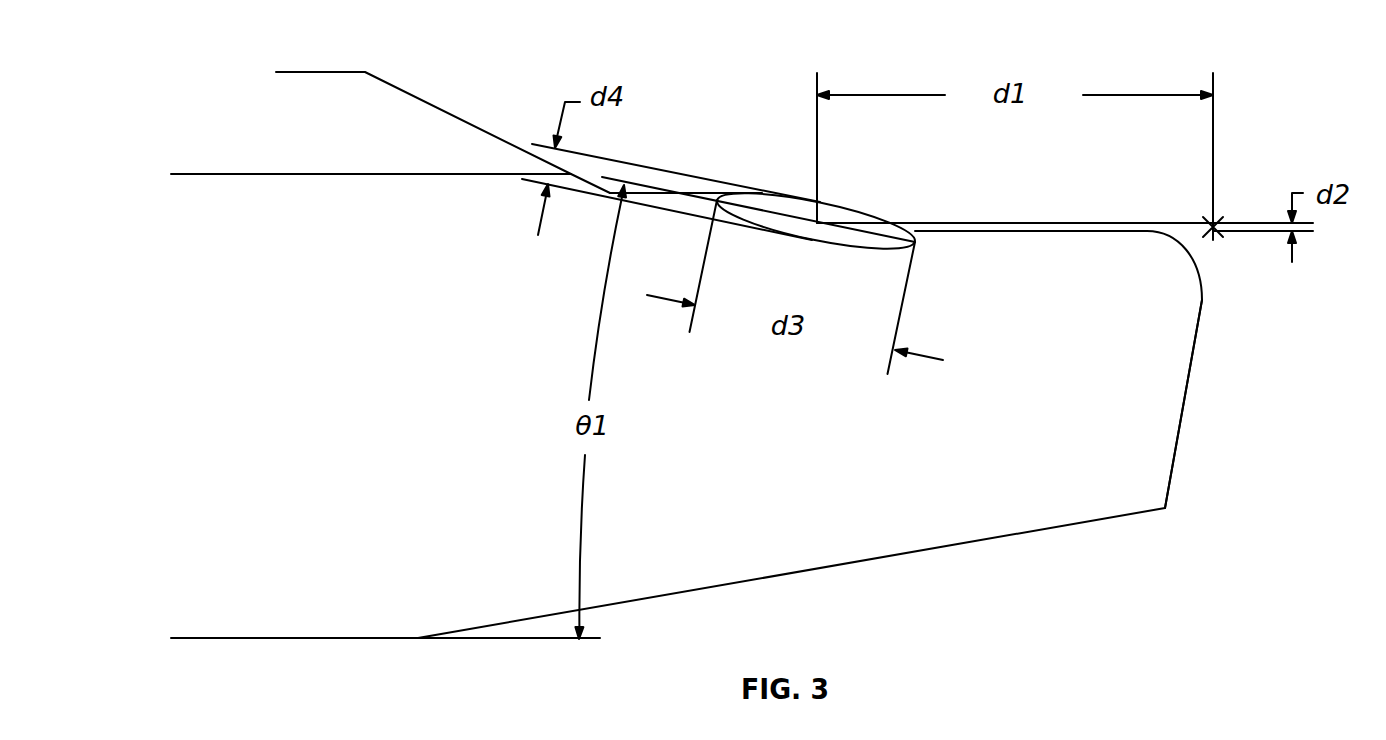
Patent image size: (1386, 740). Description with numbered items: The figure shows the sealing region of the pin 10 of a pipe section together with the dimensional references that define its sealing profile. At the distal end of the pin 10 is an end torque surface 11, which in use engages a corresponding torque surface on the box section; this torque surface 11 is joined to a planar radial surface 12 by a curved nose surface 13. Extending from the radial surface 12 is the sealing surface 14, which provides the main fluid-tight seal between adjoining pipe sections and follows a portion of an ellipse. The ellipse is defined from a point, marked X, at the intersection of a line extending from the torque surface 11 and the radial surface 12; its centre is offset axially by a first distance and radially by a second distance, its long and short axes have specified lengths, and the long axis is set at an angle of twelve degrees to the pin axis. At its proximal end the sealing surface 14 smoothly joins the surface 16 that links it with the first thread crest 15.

The pin 10 is at (398, 353).
The end torque surface 11 is at (1177, 438).
The planar radial surface 12 is at (1102, 230).
The curved nose surface 13 is at (1197, 262).
The sealing surface 14 is at (843, 207).
The first thread crest 15 is at (433, 122).
The linking surface 16 is at (711, 200).